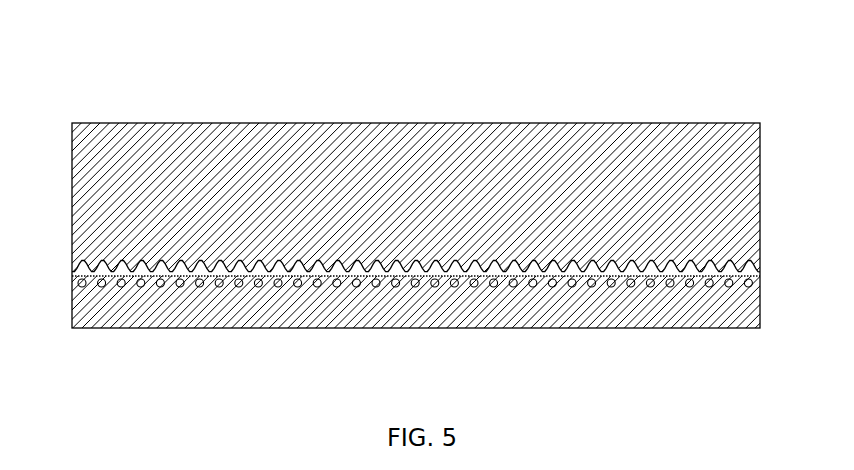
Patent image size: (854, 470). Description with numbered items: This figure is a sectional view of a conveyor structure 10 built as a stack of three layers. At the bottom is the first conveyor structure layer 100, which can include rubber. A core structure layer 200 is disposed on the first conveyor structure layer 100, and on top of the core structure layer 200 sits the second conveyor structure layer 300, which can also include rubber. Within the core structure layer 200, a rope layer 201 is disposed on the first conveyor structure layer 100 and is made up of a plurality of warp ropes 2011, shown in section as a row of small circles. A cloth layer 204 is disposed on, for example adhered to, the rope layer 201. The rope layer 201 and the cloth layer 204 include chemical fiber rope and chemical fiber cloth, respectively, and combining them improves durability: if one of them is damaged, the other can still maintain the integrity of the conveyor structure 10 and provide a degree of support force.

The conveyor structure 10 is at (126, 80).
The first conveyor structure layer 100 is at (330, 133).
The core structure layer 200 is at (64, 259).
The cloth layer 204 is at (756, 265).
The rope layer 201 is at (757, 280).
The warp ropes 2011 is at (473, 288).
The second conveyor structure layer 300 is at (350, 322).